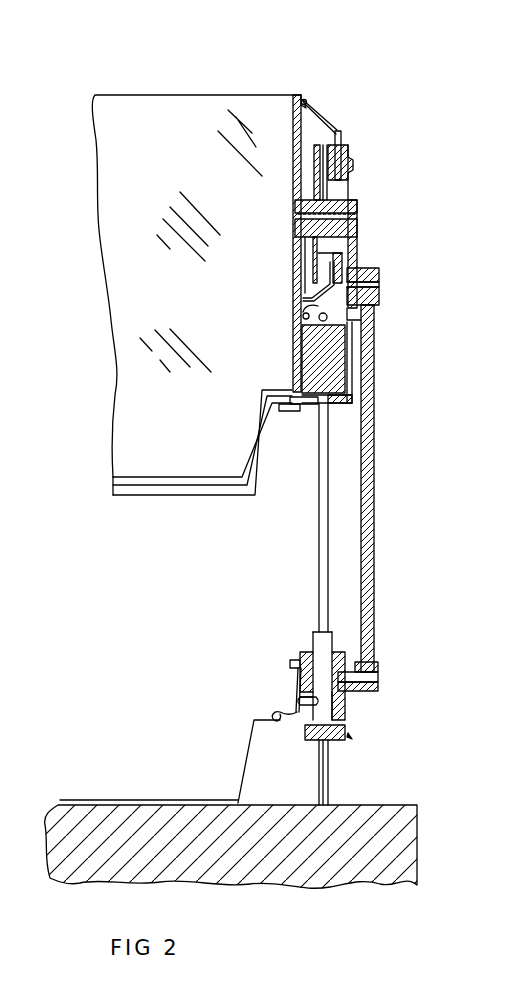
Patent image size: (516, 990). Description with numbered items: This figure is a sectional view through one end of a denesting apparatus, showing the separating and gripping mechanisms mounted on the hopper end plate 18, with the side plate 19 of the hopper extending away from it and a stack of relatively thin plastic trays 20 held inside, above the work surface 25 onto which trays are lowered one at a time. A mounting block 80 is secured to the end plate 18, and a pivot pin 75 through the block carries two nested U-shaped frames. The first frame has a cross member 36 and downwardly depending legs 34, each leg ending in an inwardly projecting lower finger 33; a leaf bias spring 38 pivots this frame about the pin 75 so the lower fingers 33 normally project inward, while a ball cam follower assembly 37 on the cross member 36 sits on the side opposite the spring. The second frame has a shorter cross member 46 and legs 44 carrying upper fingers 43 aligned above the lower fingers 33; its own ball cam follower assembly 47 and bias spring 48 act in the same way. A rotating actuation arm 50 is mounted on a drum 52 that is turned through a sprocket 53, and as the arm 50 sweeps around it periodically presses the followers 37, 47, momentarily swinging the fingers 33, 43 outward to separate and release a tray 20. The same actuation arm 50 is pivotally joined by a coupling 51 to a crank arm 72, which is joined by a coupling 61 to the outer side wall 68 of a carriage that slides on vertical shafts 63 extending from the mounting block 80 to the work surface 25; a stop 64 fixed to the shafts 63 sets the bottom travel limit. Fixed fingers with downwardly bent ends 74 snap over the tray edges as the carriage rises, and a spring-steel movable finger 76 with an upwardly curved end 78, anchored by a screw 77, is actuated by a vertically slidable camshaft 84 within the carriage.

The side plate 19 is at (162, 118).
The end plate 18 is at (306, 100).
The leaf bias spring 38 is at (333, 127).
The cross member 36 is at (341, 150).
The ball cam follower assembly 37 is at (353, 163).
The sprocket 53 is at (312, 178).
The leg 34 is at (340, 188).
The drum 52 is at (358, 207).
The actuation arm 50 is at (358, 232).
The ball cam follower assembly 47 is at (344, 256).
The coupling 51 is at (380, 283).
The cross member 46 is at (303, 296).
The pivot pin 75 is at (328, 317).
The bias spring 48 is at (303, 322).
The leg 44 is at (353, 330).
The mounting block 80 is at (330, 370).
The lower finger 33 is at (292, 407).
The upper finger 43 is at (302, 414).
The crank arm 72 is at (376, 505).
The vertical shaft 63 is at (318, 525).
The tray 20 is at (182, 500).
The coupling 61 is at (360, 665).
The screw 77 is at (296, 663).
The movable finger 76 is at (296, 690).
The downwardly bent end 74 is at (272, 713).
The upwardly curved end 78 is at (283, 725).
The outer side wall 68 is at (347, 706).
The camshaft 84 is at (348, 728).
The stop 64 is at (348, 737).
The work surface 25 is at (395, 805).